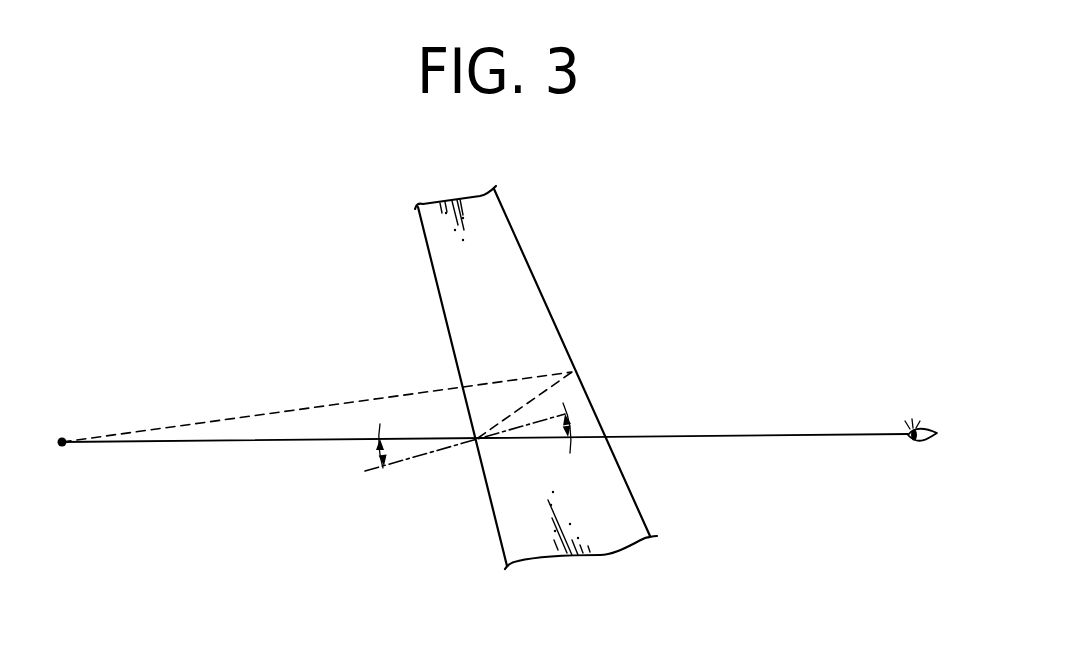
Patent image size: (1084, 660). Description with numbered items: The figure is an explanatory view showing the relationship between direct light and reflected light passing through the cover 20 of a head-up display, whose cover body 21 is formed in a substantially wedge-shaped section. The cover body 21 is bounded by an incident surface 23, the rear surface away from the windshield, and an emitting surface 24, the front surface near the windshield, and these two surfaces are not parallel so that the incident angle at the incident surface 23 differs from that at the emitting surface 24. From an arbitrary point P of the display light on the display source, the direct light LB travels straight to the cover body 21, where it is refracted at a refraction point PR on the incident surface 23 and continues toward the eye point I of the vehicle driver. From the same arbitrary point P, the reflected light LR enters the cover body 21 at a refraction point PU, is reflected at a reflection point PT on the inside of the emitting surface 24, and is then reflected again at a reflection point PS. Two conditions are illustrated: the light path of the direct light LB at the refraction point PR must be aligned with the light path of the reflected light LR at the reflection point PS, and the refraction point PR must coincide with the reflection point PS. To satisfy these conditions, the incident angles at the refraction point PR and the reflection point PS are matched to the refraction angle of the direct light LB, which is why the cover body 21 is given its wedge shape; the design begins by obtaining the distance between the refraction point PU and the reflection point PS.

The cover 20 is at (542, 260).
The cover body 21 is at (485, 234).
The incident surface 23 is at (444, 308).
The emitting surface 24 is at (555, 325).
The reflection point PS is at (497, 323).
The direct light LB is at (302, 446).
The reflected light LR is at (262, 412).
The arbitrary point P is at (63, 436).
The refraction point PU is at (450, 380).
The reflection point PT is at (583, 370).
The refraction point PR is at (474, 449).
The eye point I is at (922, 418).